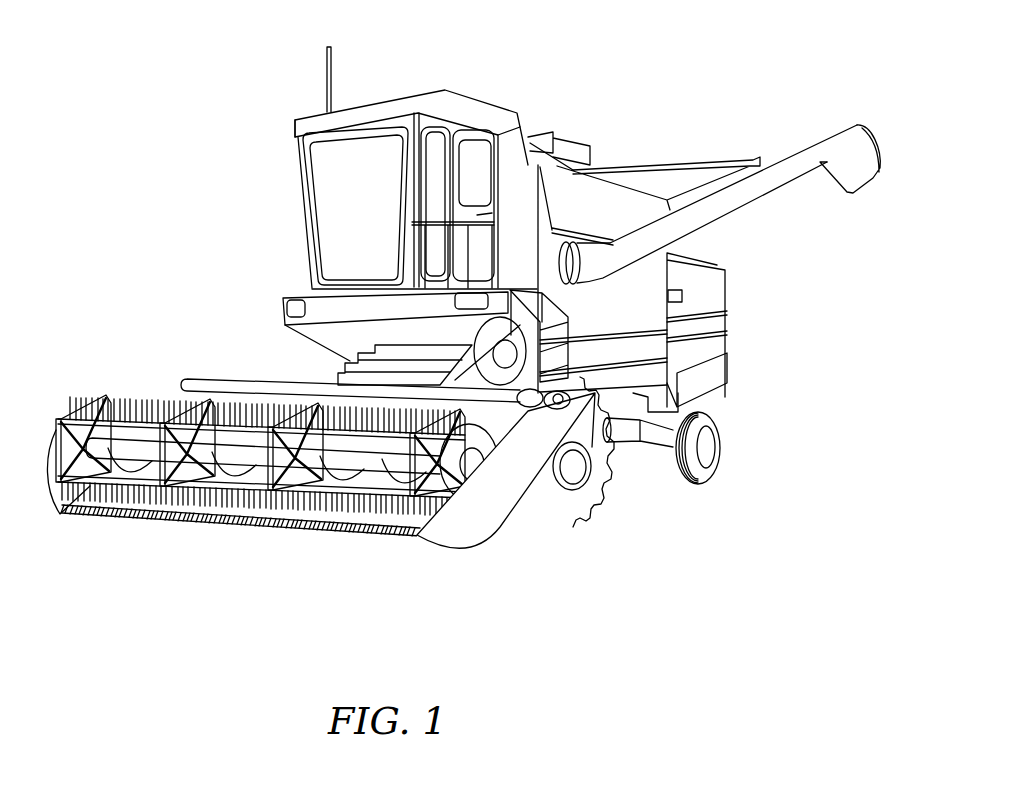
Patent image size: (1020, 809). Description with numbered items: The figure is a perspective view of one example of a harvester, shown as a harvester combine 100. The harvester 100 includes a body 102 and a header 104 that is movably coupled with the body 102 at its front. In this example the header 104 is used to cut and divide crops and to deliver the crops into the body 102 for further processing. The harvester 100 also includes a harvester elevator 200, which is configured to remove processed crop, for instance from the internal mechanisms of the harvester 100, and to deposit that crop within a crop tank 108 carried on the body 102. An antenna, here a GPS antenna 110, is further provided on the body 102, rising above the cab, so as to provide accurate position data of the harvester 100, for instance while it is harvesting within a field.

The harvester combine 100 is at (644, 63).
The body 102 is at (718, 383).
The header 104 is at (507, 528).
The crop tank 108 is at (652, 290).
The GPS antenna 110 is at (325, 47).
The harvester elevator 200 is at (527, 173).